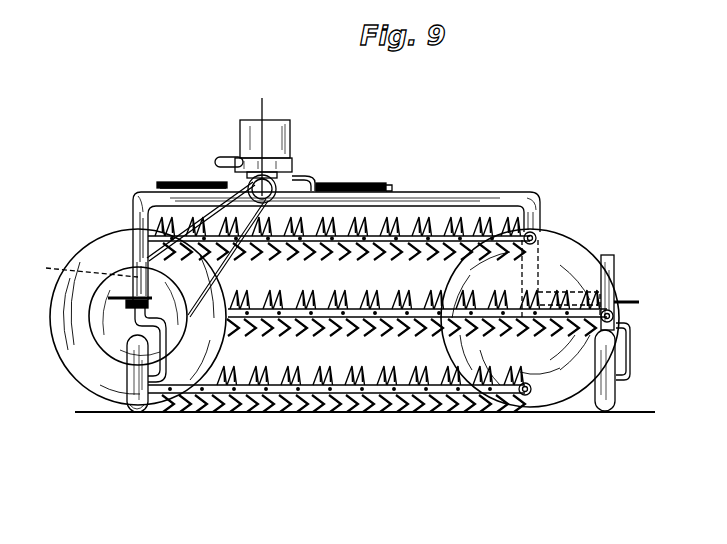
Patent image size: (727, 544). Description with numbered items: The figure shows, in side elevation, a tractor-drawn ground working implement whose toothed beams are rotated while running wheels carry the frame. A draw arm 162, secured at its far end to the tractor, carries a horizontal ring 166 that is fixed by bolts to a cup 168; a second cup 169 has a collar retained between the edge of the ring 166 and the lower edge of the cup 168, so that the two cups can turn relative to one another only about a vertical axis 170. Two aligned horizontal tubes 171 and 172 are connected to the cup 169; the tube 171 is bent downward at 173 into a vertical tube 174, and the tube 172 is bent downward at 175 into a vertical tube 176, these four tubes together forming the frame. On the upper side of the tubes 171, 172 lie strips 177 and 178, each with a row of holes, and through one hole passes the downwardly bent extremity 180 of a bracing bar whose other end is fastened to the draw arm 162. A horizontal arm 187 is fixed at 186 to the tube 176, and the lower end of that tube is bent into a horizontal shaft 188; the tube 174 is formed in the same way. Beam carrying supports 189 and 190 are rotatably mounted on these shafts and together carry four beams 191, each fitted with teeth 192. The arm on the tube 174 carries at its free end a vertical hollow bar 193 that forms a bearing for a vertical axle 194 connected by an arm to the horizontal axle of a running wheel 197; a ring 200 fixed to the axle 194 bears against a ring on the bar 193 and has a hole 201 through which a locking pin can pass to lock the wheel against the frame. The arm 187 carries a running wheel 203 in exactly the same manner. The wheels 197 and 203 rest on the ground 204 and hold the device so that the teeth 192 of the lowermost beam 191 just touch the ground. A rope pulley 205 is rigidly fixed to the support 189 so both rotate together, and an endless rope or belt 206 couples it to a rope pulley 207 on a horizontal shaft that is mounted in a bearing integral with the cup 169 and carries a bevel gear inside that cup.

The draw arm 162 is at (222, 157).
The horizontal ring 166 is at (292, 165).
The cup 168 is at (290, 128).
The second cup 169 is at (312, 179).
The vertical axis 170 is at (266, 102).
The horizontal tube 171 is at (157, 192).
The horizontal tube 172 is at (462, 192).
The bend 173 is at (133, 213).
The vertical tube 174 is at (128, 246).
The bend 175 is at (531, 200).
The vertical tube 176 is at (542, 216).
The strip 177 is at (162, 190).
The strip 178 is at (384, 185).
The downwardly bent extremity 180 is at (348, 184).
The fixing point 186 is at (522, 282).
The horizontal arm 187 is at (569, 291).
The horizontal shaft 188 is at (530, 318).
The beam carrying support 189 is at (82, 247).
The beam carrying support 190 is at (567, 252).
The beam 191 is at (352, 298).
The teeth 192 is at (205, 413).
The vertical hollow bar 193 is at (150, 262).
The vertical axle 194 is at (80, 269).
The running wheel 197 is at (136, 414).
The ring 200 is at (152, 302).
The hole 201 is at (136, 324).
The running wheel 203 is at (613, 411).
The ground 204 is at (388, 415).
The rope pulley 205 is at (120, 366).
The endless rope or belt 206 is at (232, 270).
The rope pulley 207 is at (240, 180).